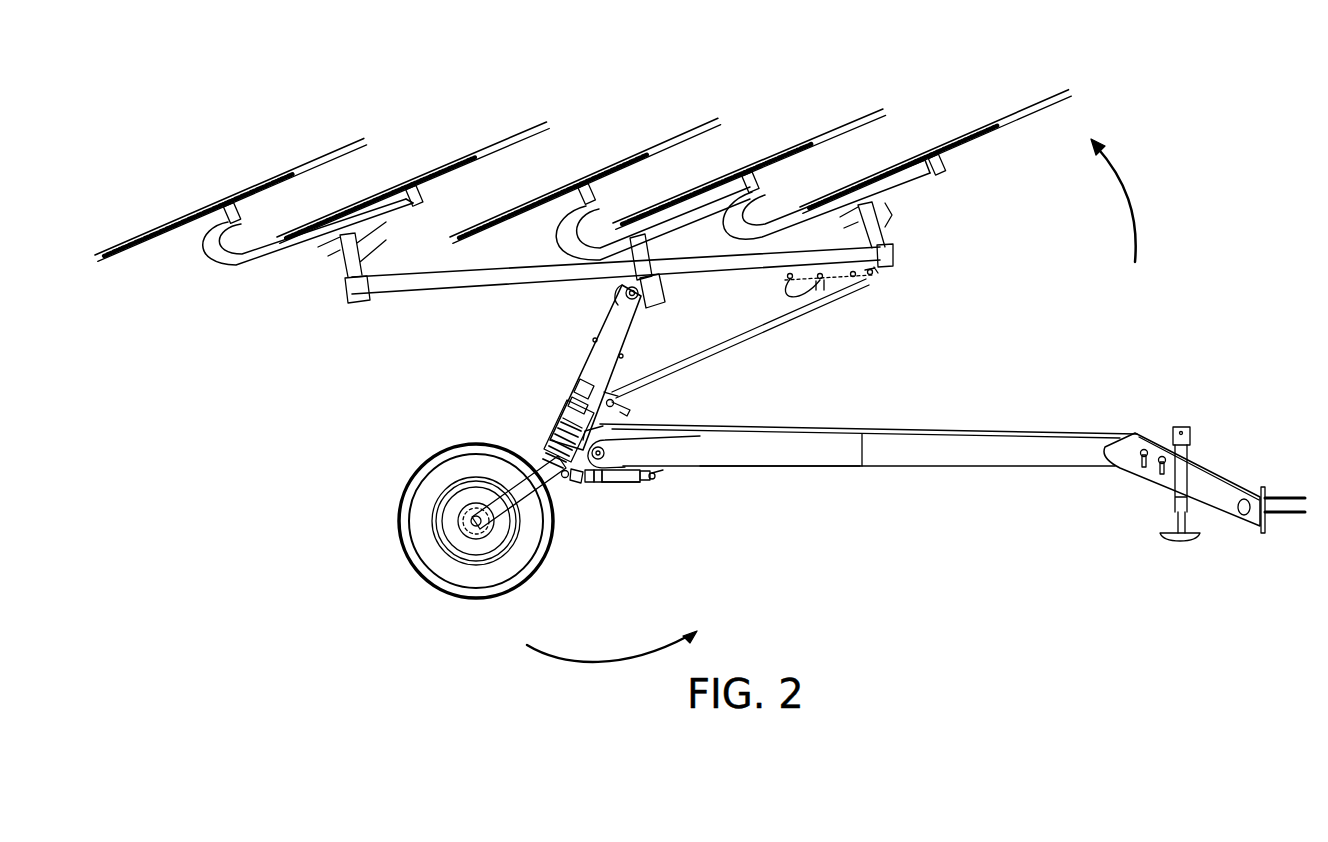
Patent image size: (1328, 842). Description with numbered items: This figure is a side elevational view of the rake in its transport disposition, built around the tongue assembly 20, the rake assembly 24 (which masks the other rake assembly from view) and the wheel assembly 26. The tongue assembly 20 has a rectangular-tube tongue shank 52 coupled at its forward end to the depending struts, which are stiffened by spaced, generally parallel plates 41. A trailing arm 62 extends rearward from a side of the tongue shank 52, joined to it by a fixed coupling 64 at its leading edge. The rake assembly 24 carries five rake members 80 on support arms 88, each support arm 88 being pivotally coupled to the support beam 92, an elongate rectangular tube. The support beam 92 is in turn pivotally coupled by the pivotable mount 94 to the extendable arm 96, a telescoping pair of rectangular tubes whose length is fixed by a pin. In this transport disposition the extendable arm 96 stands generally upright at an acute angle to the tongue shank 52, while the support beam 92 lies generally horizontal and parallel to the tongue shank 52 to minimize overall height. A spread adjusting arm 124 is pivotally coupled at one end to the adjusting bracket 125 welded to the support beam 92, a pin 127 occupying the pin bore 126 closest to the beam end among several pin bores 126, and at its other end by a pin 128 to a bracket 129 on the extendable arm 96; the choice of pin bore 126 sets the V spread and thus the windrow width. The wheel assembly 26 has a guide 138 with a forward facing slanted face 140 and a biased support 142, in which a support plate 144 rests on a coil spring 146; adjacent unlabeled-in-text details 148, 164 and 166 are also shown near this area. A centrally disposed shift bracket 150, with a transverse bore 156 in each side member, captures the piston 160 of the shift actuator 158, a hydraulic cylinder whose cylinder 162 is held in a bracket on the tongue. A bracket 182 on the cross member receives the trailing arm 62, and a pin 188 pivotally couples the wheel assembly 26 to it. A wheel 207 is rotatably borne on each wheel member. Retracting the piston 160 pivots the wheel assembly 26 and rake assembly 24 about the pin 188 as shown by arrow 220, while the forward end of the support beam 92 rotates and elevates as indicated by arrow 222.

The tongue assembly 20 is at (1078, 436).
The rake assembly 24 is at (642, 148).
The wheel assembly 26 is at (429, 521).
The parallel plates 41 is at (1215, 477).
The tongue shank 52 is at (868, 474).
The trailing arm 62 is at (831, 463).
The fixed coupling 64 is at (863, 440).
The rake member 80 is at (268, 176).
The support arm 88 is at (232, 264).
The support beam 92 is at (678, 270).
The pivotable mount 94 is at (668, 299).
The extendable arm 96 is at (606, 333).
The spread adjusting arm 124 is at (715, 345).
The adjusting bracket 125 is at (822, 280).
The pin bore 126 is at (856, 277).
The pin 127 is at (866, 272).
The pin 128 is at (632, 409).
The bracket 129 is at (615, 391).
The guide 138 is at (550, 426).
The slanted face 140 is at (572, 388).
The biased support 142 is at (545, 446).
The support plate 144 is at (571, 410).
The coil spring 146 is at (558, 456).
The pivot pin 148 is at (567, 478).
The shift bracket 150 is at (574, 480).
The transverse bore 156 is at (583, 482).
The shift actuator 158 is at (607, 480).
The piston 160 is at (590, 478).
The cylinder 162 is at (620, 480).
The latch housing 164 is at (650, 473).
The latch catch 166 is at (633, 482).
The bracket 182 is at (610, 435).
The pin 188 is at (640, 445).
The wheel 207 is at (415, 537).
The arrow 220 is at (592, 668).
The arrow 222 is at (1095, 200).